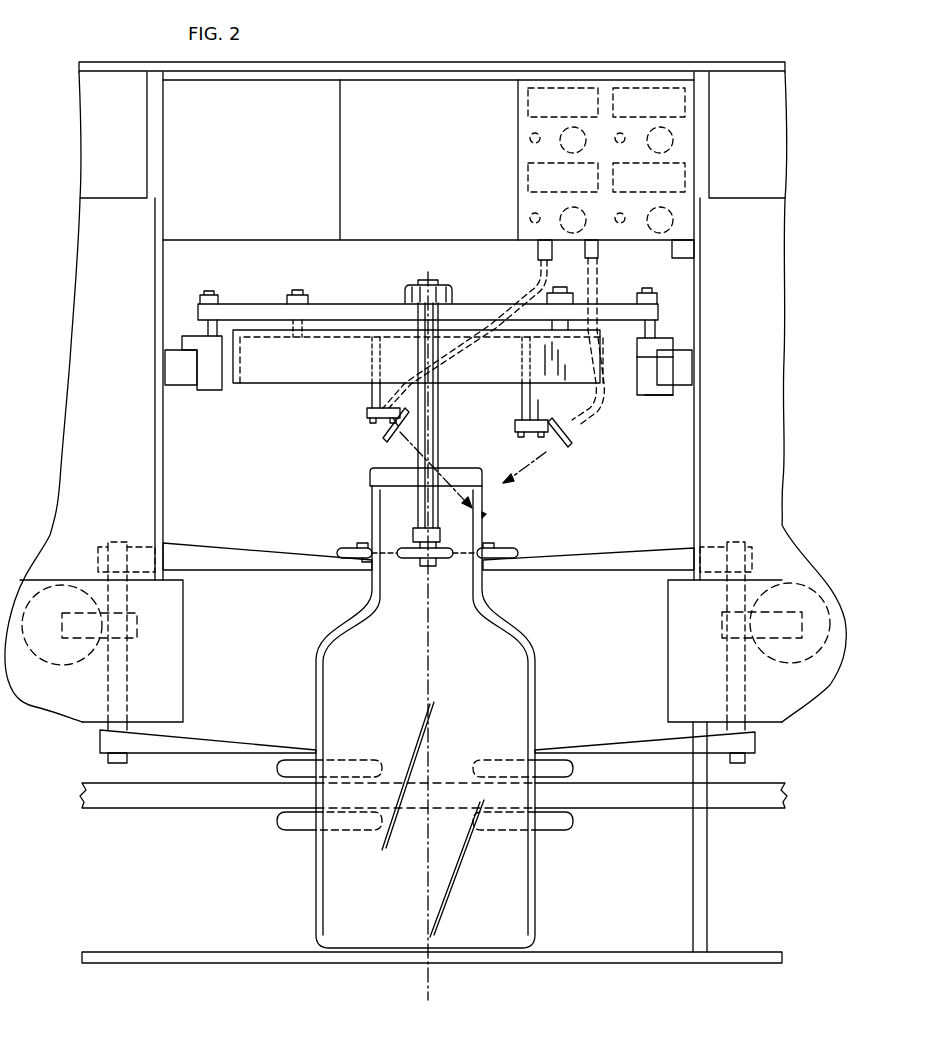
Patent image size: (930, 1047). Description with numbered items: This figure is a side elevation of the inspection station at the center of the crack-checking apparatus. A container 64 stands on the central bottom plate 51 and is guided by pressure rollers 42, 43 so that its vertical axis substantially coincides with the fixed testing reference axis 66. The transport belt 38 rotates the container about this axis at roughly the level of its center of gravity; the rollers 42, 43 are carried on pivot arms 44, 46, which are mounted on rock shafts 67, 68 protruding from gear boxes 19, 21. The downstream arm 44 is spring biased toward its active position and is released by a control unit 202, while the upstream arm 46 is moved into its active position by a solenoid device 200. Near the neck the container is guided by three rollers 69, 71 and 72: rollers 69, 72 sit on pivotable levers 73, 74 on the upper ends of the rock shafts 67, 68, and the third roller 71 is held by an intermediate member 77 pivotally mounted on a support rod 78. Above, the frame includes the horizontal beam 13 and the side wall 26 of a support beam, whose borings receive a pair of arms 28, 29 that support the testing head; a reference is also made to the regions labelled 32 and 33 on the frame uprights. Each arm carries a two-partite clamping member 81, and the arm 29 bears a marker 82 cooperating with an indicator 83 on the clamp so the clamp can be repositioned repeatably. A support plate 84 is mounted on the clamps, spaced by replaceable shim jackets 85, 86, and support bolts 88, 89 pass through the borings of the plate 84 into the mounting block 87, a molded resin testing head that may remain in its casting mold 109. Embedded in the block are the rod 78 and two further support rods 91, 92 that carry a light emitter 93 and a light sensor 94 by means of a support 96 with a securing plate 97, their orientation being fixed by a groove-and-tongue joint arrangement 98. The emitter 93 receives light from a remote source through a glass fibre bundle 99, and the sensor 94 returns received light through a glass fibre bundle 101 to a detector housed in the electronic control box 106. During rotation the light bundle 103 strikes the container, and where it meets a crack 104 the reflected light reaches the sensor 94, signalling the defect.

The horizontal beam 13 is at (480, 62).
The electronic control box 106 is at (518, 158).
The left frame column 32 is at (84, 397).
The right frame column 33 is at (770, 397).
The support plate 84 is at (455, 304).
The shim jacket 85 is at (205, 330).
The support bolt 88 is at (297, 294).
The support bolt 89 is at (560, 292).
The indicator 83 is at (655, 338).
The mounting block 87 is at (416, 356).
The casting mold 109 is at (348, 338).
The arm 28 is at (178, 378).
The shim jacket 86 is at (637, 344).
The clamping member 81 is at (640, 380).
The marker 82 is at (686, 348).
The arm 29 is at (680, 383).
The glass fibre bundle 99 is at (536, 283).
The glass fibre bundle 101 is at (590, 418).
The support rod 91 is at (366, 394).
The light emitter 93 is at (386, 438).
The support rod 92 is at (523, 398).
The groove-and-tongue joint arrangement 98 is at (538, 414).
The support 96 is at (515, 430).
The securing plate 97 is at (567, 445).
The light bundle 103 is at (457, 478).
The light sensor 94 is at (541, 454).
The crack 104 is at (486, 514).
The intermediate member 77 is at (413, 532).
The roller 71 is at (410, 560).
The roller 69 is at (343, 548).
The roller 72 is at (508, 548).
The lever 73 is at (240, 550).
The lever 74 is at (610, 556).
The container 64 is at (425, 708).
The support rod 78 is at (396, 494).
The testing reference axis 66 is at (416, 665).
The gear box 19 is at (101, 651).
The control unit 202 is at (57, 664).
The gear box 21 is at (725, 651).
The solenoid device 200 is at (795, 660).
The pivot arm 44 is at (226, 740).
The pivot arm 46 is at (622, 738).
The rock shaft 67 is at (118, 763).
The rock shaft 68 is at (745, 760).
The transport belt 38 is at (642, 795).
The pressure roller 42 is at (280, 770).
The pressure roller 43 is at (566, 770).
The side wall 26 is at (693, 900).
The central bottom plate 51 is at (614, 963).